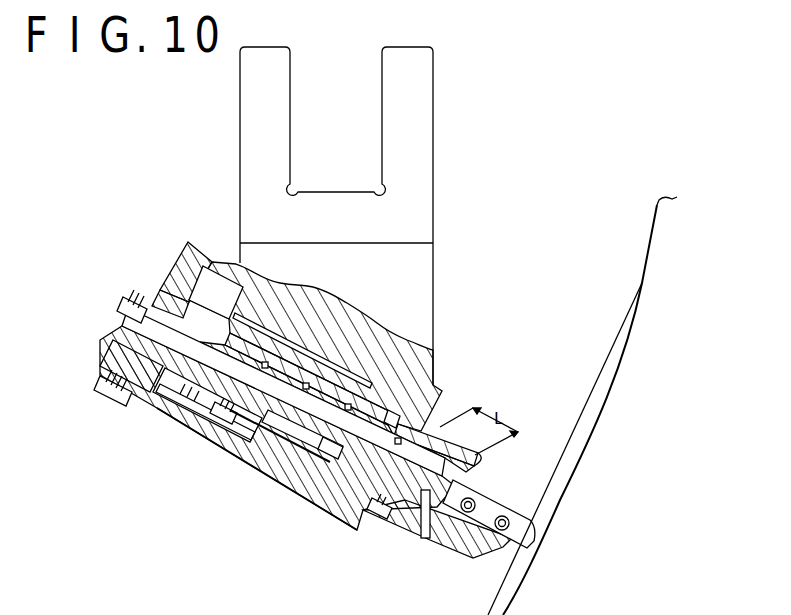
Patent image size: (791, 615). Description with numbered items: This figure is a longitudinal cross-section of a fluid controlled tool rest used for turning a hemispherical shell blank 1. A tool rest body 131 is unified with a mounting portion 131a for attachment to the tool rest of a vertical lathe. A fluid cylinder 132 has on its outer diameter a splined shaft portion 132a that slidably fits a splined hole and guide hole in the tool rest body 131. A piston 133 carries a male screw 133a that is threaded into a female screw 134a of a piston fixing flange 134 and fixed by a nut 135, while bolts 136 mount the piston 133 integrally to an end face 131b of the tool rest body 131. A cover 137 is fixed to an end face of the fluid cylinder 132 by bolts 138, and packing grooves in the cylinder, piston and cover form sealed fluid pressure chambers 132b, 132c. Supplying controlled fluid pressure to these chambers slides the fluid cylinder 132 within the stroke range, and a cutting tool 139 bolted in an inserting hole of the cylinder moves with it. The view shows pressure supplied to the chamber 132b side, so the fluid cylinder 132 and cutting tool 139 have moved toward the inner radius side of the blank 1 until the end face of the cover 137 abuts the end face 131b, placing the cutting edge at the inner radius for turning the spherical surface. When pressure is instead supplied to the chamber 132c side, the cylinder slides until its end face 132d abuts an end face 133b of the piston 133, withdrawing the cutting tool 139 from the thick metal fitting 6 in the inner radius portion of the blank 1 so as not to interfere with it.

The hemispherical shell blank 1 is at (648, 257).
The thick metal fitting 6 is at (614, 341).
The tool rest body 131 is at (437, 366).
The mounting portion 131a is at (418, 135).
The end face of the tool rest body 131b is at (212, 445).
The fluid cylinder 132 is at (437, 413).
The splined shaft portion 132a is at (293, 340).
The fluid pressure chamber 132b is at (315, 483).
The fluid pressure chamber 132c is at (250, 423).
The end face of the fluid cylinder 132d is at (417, 540).
The piston 133 is at (160, 425).
The male screw 133a is at (122, 352).
The end face of the piston 133b is at (387, 514).
The piston fixing flange 134 is at (182, 262).
The female screw 134a is at (162, 284).
The nut 135 is at (122, 344).
The bolts 136 is at (107, 408).
The cover 137 is at (218, 306).
The bolts 138 is at (196, 416).
The cutting tool 139 is at (531, 500).